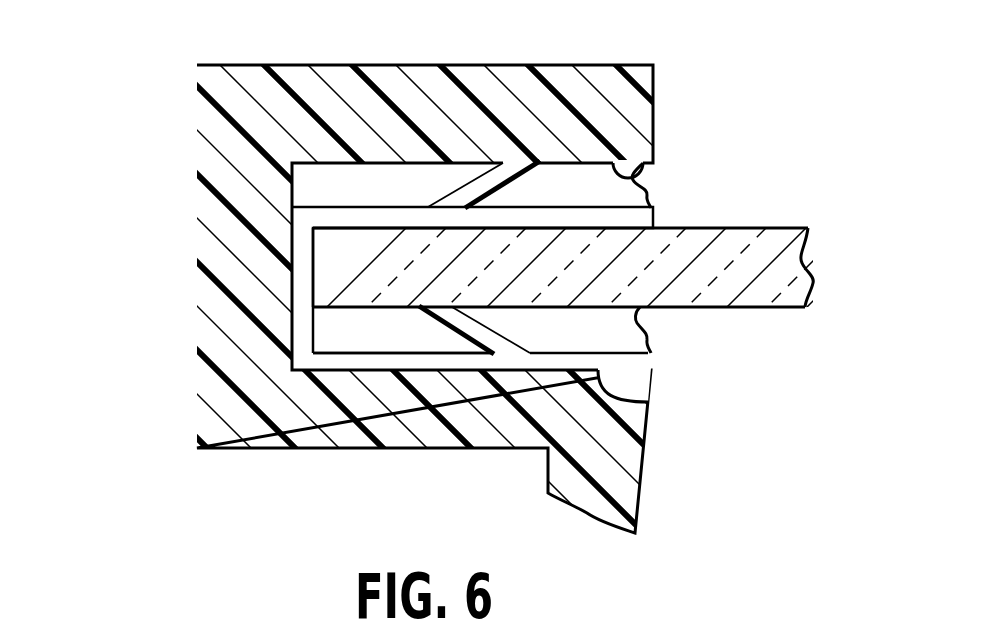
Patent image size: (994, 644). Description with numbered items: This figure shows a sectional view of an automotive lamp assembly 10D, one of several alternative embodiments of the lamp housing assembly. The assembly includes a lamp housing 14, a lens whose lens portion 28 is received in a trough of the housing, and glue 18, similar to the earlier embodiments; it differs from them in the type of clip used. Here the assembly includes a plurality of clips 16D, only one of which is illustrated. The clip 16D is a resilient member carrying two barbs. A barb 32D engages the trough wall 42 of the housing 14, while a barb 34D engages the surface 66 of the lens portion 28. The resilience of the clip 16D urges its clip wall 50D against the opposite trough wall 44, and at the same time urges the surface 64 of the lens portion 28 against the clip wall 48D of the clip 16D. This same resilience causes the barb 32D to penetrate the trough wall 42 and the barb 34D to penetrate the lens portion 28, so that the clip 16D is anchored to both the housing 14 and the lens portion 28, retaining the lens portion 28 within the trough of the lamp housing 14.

The automotive lamp assembly 10D is at (158, 125).
The lamp housing 14 is at (475, 470).
The clip 16D is at (662, 217).
The glue 18 is at (625, 192).
The lens portion 28 is at (807, 258).
The barb 32D is at (483, 177).
The barb 34D is at (445, 316).
The trough wall 42 is at (645, 165).
The opposite trough wall 44 is at (648, 362).
The clip wall 48D is at (365, 252).
The clip wall 50D is at (648, 402).
The surface of the lens portion 64 is at (780, 228).
The surface of the lens portion 66 is at (717, 307).